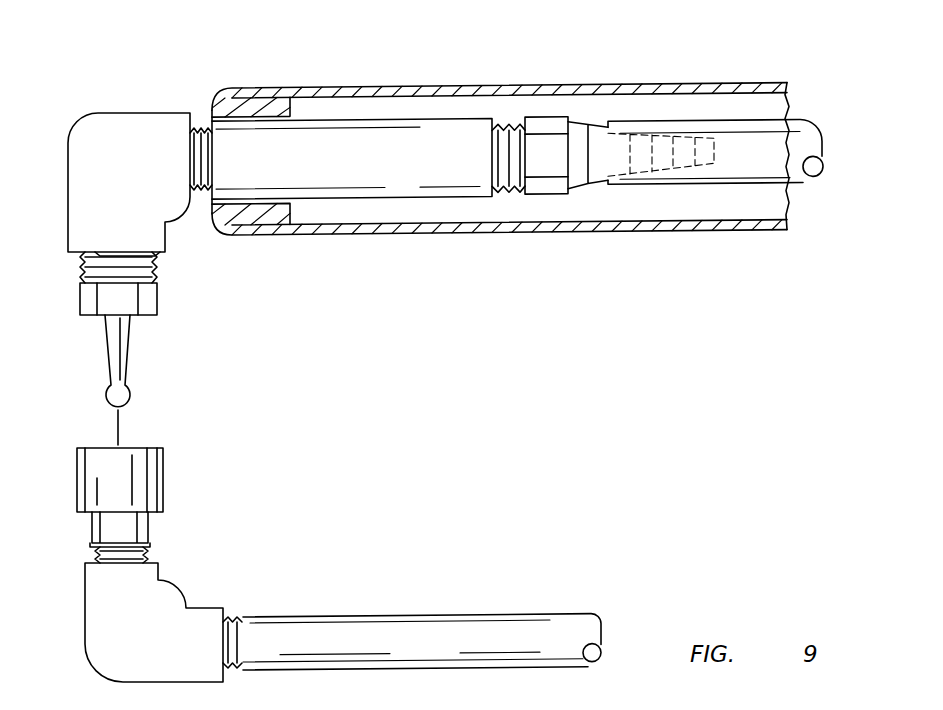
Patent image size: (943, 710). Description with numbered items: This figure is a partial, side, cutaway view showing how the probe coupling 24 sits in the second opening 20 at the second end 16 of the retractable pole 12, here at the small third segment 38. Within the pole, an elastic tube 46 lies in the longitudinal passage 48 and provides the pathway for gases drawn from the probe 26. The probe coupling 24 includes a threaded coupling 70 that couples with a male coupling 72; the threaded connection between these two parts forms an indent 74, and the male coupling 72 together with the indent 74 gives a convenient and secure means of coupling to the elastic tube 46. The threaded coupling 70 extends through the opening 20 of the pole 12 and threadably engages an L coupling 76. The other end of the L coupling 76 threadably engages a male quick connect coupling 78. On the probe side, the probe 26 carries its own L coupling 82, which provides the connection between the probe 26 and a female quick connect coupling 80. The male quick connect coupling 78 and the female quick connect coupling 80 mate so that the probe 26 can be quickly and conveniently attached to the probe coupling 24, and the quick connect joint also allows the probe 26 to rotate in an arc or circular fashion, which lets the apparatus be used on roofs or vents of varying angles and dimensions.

The retractable pole 12 is at (500, 193).
The second end 16 is at (213, 103).
The second opening 20 is at (207, 197).
The probe coupling 24 is at (116, 247).
The probe 26 is at (407, 616).
The third segment 38 is at (390, 240).
The elastic tube 46 is at (801, 189).
The longitudinal passage 48 is at (719, 143).
The threaded coupling 70 is at (365, 172).
The male coupling 72 is at (575, 123).
The indent 74 is at (500, 126).
The L coupling 76 is at (133, 184).
The male quick connect coupling 78 is at (78, 298).
The female quick connect coupling 80 is at (78, 480).
The L coupling 82 is at (156, 652).